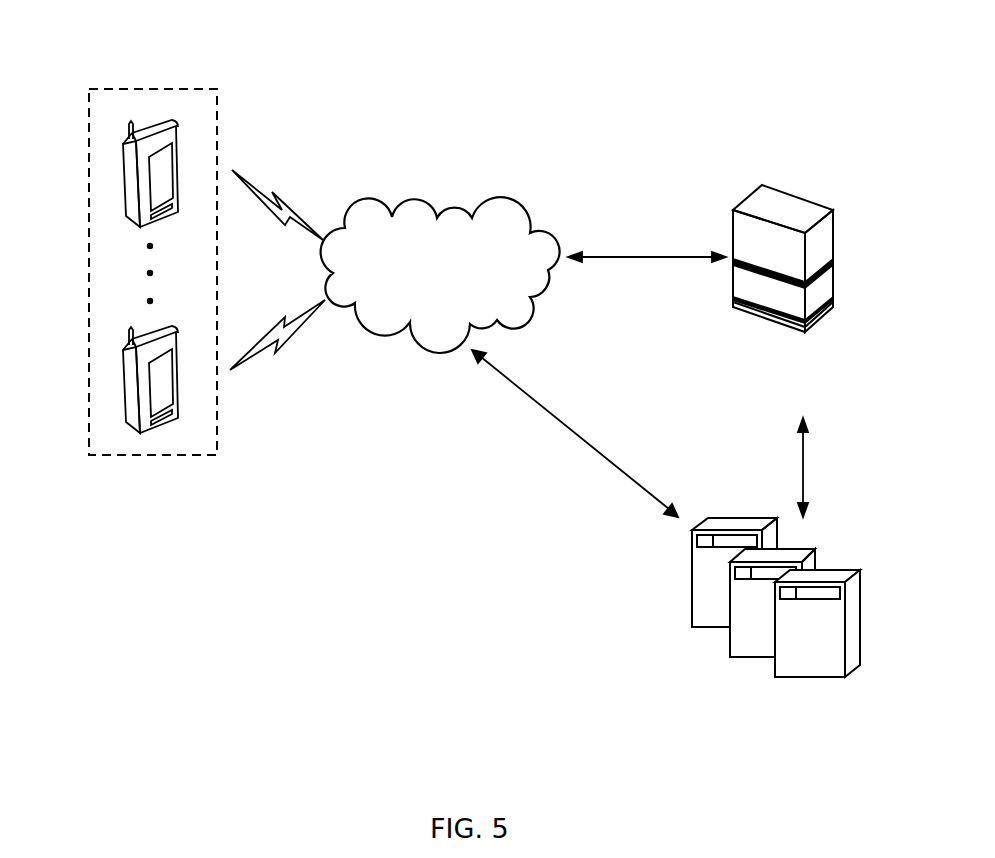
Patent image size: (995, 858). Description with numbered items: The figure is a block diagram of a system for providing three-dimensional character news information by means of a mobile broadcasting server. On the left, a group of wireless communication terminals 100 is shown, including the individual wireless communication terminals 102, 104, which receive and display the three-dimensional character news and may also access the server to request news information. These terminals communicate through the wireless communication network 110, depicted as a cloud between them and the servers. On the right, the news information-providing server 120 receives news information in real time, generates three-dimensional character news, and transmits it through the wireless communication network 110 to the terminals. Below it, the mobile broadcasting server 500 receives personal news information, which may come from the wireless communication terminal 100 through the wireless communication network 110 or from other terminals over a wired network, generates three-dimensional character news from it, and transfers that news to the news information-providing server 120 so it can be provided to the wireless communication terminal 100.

The wireless communication terminal 100 is at (163, 87).
The wireless communication terminal 102 is at (123, 167).
The wireless communication terminal 104 is at (121, 375).
The wireless communication network 110 is at (394, 208).
The news information-providing server 120 is at (783, 202).
The mobile broadcasting server 500 is at (835, 573).